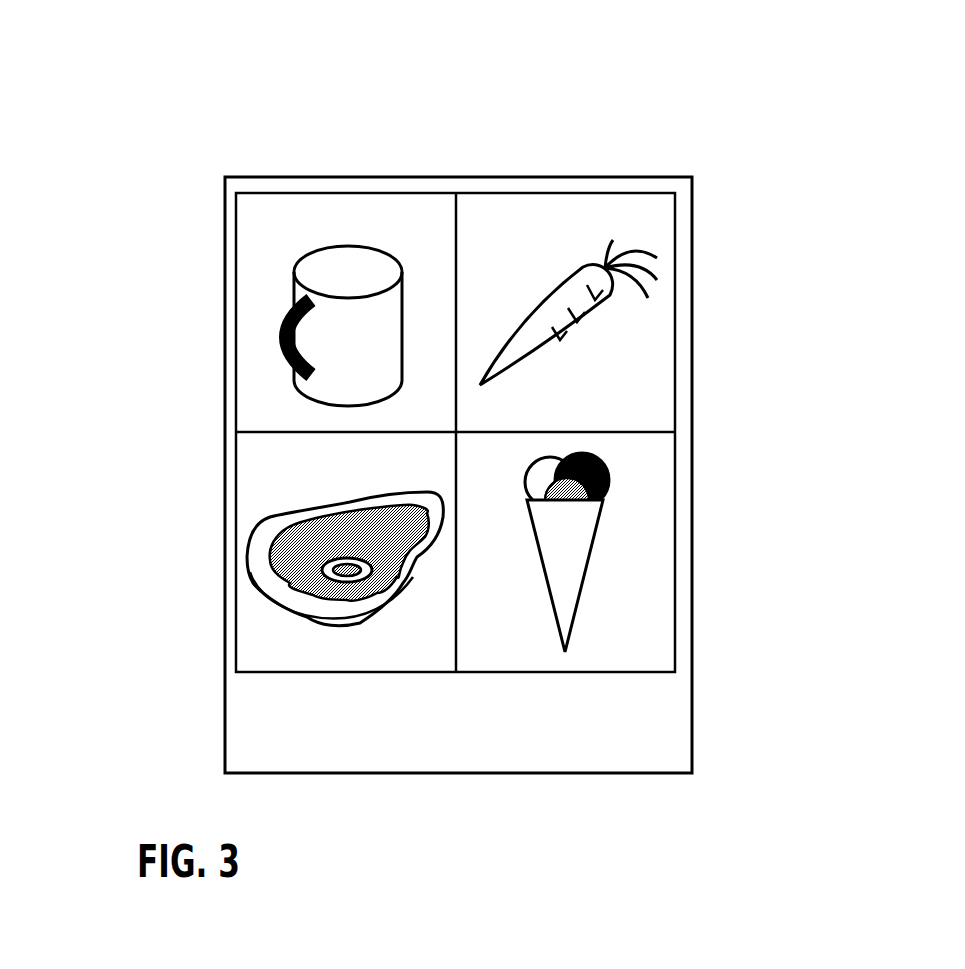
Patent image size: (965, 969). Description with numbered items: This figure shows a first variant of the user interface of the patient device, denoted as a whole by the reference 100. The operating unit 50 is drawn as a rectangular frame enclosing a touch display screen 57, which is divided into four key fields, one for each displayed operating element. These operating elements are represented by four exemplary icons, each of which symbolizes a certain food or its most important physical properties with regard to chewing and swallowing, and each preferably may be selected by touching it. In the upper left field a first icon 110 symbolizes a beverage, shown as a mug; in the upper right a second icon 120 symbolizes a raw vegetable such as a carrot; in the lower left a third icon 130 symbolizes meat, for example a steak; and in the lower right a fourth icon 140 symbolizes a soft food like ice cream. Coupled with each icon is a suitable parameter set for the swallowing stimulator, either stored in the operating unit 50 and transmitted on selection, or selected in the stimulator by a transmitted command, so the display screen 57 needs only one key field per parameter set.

The system 100 is at (822, 152).
The operating unit 50 is at (618, 185).
The touch display screen 57 is at (400, 210).
The first icon 110 is at (352, 330).
The second icon 120 is at (587, 310).
The third icon 130 is at (337, 547).
The fourth icon 140 is at (570, 540).